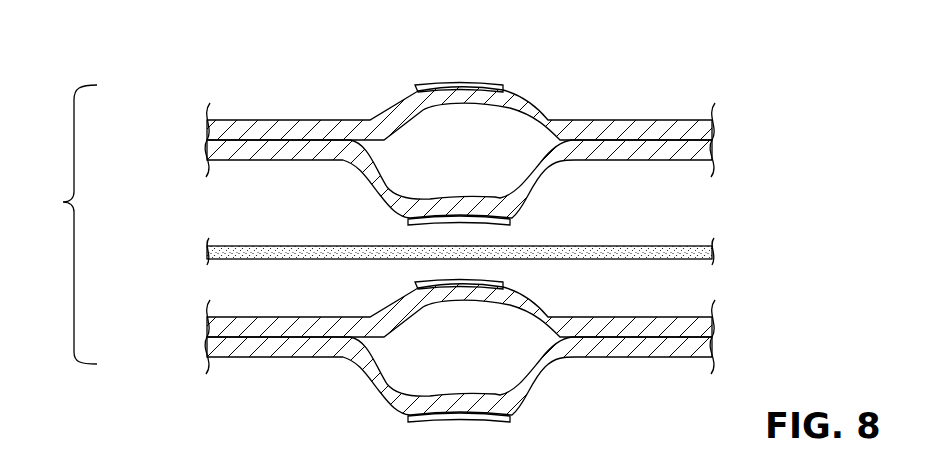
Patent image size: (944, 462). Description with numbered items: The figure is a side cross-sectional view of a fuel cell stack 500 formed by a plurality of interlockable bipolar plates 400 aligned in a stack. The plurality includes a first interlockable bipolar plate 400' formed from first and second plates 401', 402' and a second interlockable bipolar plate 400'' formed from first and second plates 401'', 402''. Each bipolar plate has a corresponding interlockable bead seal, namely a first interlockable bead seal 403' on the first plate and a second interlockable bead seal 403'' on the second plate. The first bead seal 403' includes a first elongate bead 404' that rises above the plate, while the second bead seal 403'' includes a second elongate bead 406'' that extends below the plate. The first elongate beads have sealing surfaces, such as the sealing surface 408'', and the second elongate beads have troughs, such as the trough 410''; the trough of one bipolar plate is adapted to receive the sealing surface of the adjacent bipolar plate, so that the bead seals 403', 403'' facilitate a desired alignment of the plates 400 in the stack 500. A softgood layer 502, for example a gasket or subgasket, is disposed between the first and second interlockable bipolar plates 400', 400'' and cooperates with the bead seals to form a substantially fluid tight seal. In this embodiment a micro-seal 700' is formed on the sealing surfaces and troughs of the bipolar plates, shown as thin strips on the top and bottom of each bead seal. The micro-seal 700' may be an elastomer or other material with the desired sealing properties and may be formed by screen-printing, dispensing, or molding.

The interlockable bipolar plates 400 is at (426, 216).
The first interlockable bipolar plate 400' is at (479, 110).
The second interlockable bipolar plate 400'' is at (481, 356).
The first plate 401' is at (521, 132).
The second plate 402' is at (522, 179).
The first plate 401'' is at (523, 329).
The second plate 402'' is at (524, 376).
The first interlockable bead seal 403' is at (524, 39).
The second interlockable bead seal 403'' is at (615, 413).
The first elongate bead 404' is at (352, 78).
The second elongate bead 406'' is at (321, 379).
The sealing surface 408'' is at (497, 226).
The trough 410'' is at (426, 269).
The fuel cell stack 500 is at (576, 58).
The softgood layer 502 is at (712, 248).
The micro-seal 700' is at (497, 263).